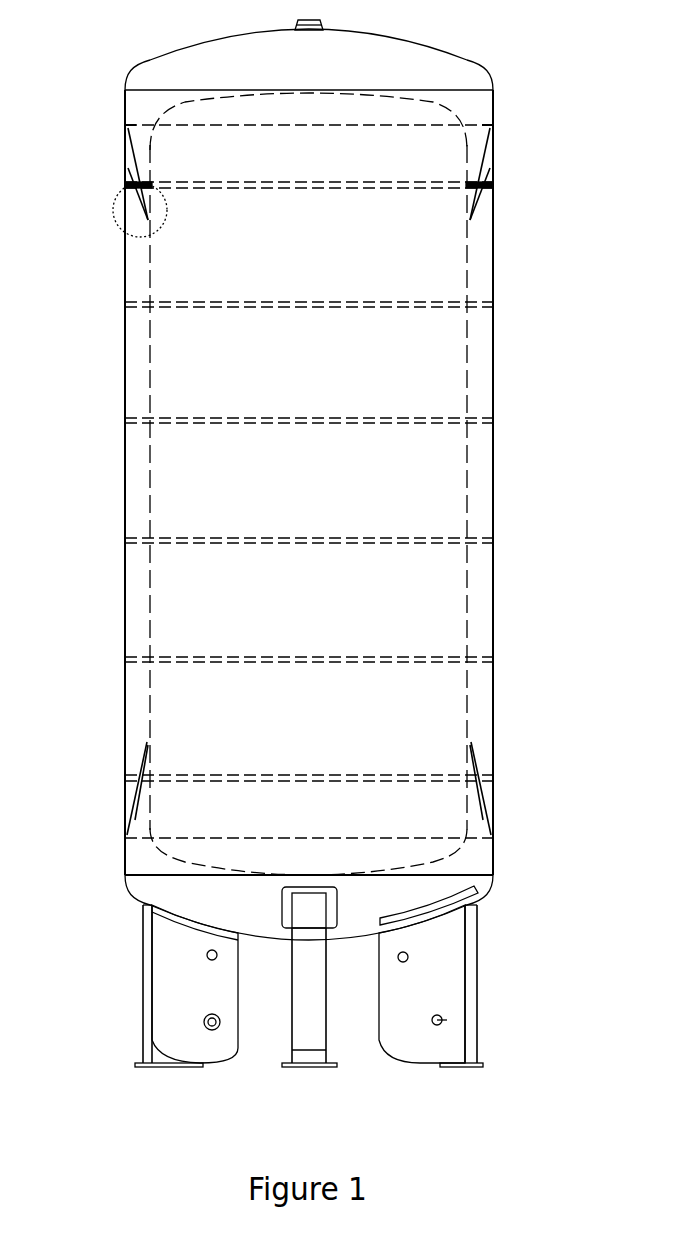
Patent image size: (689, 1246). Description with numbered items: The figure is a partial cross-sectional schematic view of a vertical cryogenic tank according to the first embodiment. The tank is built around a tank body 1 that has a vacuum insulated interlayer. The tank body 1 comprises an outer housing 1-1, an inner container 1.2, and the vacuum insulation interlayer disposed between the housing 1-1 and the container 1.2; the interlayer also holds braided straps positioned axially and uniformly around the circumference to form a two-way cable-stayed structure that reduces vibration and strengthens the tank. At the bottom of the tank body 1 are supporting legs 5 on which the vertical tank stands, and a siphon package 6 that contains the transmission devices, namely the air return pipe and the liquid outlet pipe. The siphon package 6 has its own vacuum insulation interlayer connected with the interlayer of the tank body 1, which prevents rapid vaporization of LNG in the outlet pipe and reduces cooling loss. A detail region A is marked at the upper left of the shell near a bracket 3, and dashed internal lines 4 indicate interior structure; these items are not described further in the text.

The tank body 1 is at (495, 275).
The housing 1-1 is at (130, 136).
The container 1.2 is at (151, 283).
The reinforcing bracket 3 is at (127, 183).
The detail A is at (128, 222).
The baffle plates 4 is at (128, 657).
The supporting legs 5 is at (141, 927).
The siphon package 6 is at (160, 1010).